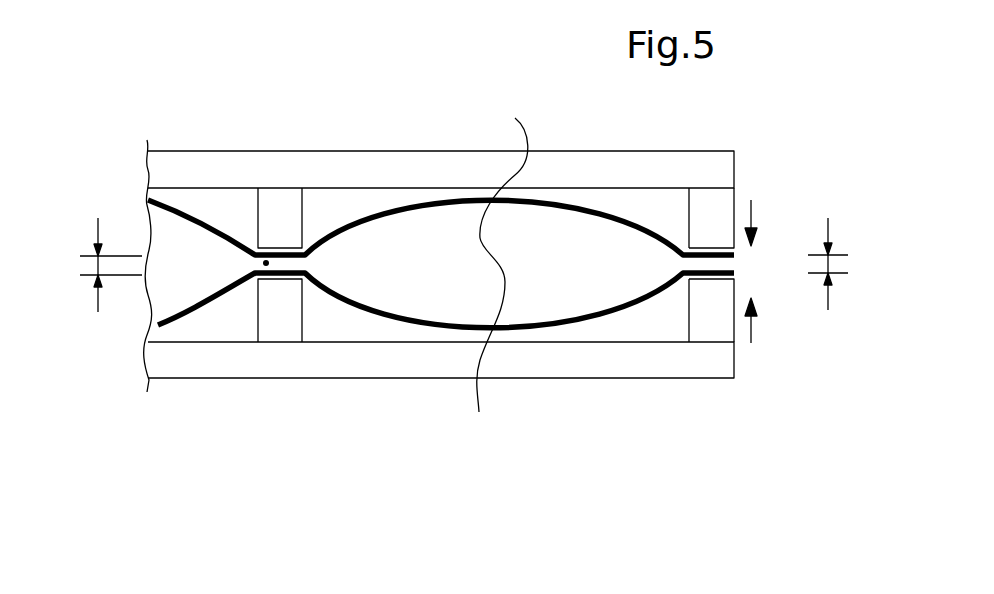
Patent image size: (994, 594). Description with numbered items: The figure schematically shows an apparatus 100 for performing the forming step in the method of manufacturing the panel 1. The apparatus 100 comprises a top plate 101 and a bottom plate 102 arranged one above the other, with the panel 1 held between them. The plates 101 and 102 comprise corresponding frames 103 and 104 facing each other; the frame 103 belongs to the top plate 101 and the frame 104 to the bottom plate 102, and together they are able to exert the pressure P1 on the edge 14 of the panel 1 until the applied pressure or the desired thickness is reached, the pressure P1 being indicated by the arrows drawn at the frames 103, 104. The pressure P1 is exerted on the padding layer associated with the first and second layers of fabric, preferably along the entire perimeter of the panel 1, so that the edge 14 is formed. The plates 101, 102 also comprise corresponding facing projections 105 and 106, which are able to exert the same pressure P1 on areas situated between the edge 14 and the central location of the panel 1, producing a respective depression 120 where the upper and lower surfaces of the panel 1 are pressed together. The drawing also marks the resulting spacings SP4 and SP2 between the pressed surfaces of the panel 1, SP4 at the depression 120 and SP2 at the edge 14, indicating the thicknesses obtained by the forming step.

The apparatus 100 is at (464, 313).
The top plate 101 is at (461, 140).
The bottom plate 102 is at (448, 391).
The frame 103 is at (708, 212).
The frame 104 is at (712, 326).
The projection 105 is at (288, 218).
The fourth spacer block 106 is at (286, 315).
The edge 14 is at (720, 258).
The depression 120 is at (262, 261).
The panel 1 is at (667, 330).
The pressure P1 is at (764, 271).
The spacing SP4 is at (95, 265).
The spacing SP2 is at (845, 264).